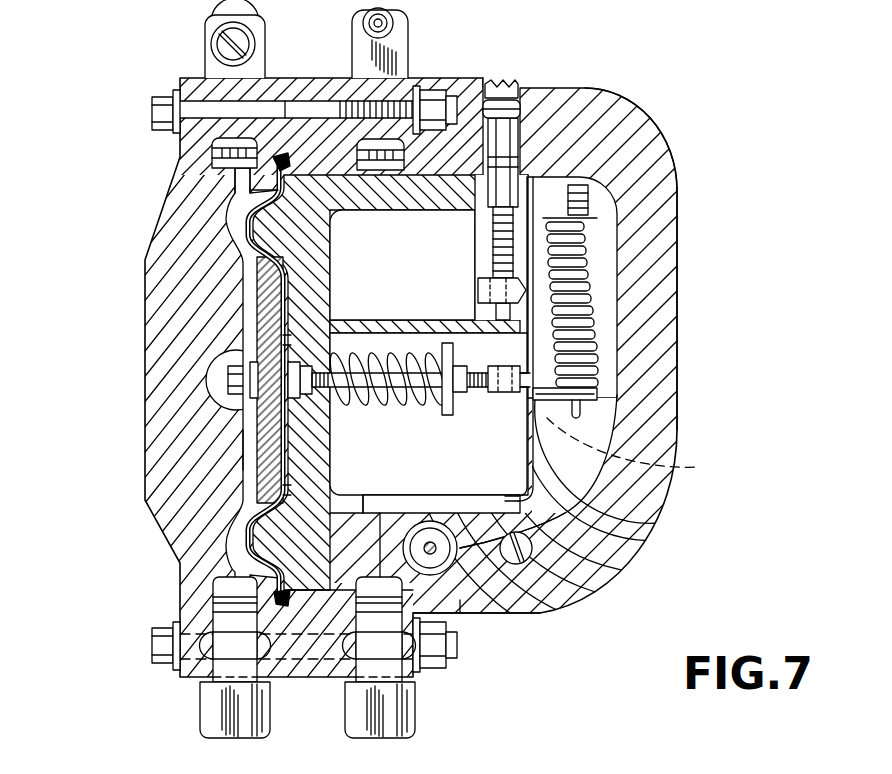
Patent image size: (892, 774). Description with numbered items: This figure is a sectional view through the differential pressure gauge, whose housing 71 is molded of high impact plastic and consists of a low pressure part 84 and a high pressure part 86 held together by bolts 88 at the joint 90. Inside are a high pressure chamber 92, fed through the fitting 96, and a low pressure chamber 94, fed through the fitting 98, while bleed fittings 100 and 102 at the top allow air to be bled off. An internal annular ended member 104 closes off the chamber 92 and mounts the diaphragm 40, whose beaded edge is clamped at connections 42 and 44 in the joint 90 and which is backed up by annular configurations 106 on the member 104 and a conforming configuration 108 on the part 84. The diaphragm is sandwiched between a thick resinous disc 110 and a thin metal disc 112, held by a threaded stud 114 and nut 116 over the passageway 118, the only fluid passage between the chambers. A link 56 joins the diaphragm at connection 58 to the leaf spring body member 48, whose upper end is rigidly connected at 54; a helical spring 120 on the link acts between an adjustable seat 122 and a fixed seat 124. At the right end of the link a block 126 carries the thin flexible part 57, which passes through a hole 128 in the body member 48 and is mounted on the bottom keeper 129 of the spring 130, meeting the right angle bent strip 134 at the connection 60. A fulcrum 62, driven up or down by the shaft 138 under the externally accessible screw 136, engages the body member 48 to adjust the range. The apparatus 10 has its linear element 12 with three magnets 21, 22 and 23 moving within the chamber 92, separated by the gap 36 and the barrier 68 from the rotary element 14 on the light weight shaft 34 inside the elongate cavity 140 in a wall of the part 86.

The apparatus 10 is at (603, 500).
The linear element 12 is at (363, 508).
The rotary element 14 is at (453, 510).
The magnet 21 is at (383, 510).
The magnet 22 is at (532, 611).
The magnet 23 is at (527, 550).
The light weight shaft 34 is at (432, 552).
The gap 36 is at (427, 510).
The diaphragm 40 is at (250, 210).
The connection 42 is at (311, 135).
The connection 44 is at (253, 577).
The body member 48 is at (545, 335).
The rigid connection 54 is at (603, 123).
The link 56 is at (380, 360).
The flexible part 57 is at (600, 565).
The connection 58 is at (270, 460).
The connection 60 is at (582, 416).
The fulcrum 62 is at (515, 235).
The barrier 68 is at (452, 507).
The housing 71 is at (665, 154).
The low pressure part 84 is at (160, 263).
The high pressure part 86 is at (667, 180).
The bolts 88 is at (155, 112).
The joint 90 is at (284, 97).
The high pressure chamber 92 is at (405, 477).
The low pressure chamber 94 is at (232, 508).
The fitting 96 is at (413, 715).
The fitting 98 is at (207, 715).
The high pressure bleed fitting 100 is at (410, 62).
The low pressure bleed fitting 102 is at (203, 43).
The internal annular ended member 104 is at (458, 200).
The annular configurations 106 is at (263, 287).
The conforming configuration 108 is at (227, 220).
The thick disc 110 is at (250, 483).
The thin metal disc 112 is at (228, 372).
The threaded stud 114 is at (265, 392).
The nut 116 is at (300, 381).
The passageway 118 is at (253, 378).
The helical spring 120 is at (427, 407).
The adjustable seat 122 is at (600, 352).
The fixed seat 124 is at (287, 333).
The block 126 is at (560, 530).
The hole 128 is at (642, 448).
The bottom keeper 129 is at (592, 376).
The spring 130 is at (597, 343).
The right angle bent strip 134 is at (567, 483).
The externally accessible screw 136 is at (520, 100).
The shaft 138 is at (540, 222).
The elongate cavity 140 is at (521, 614).